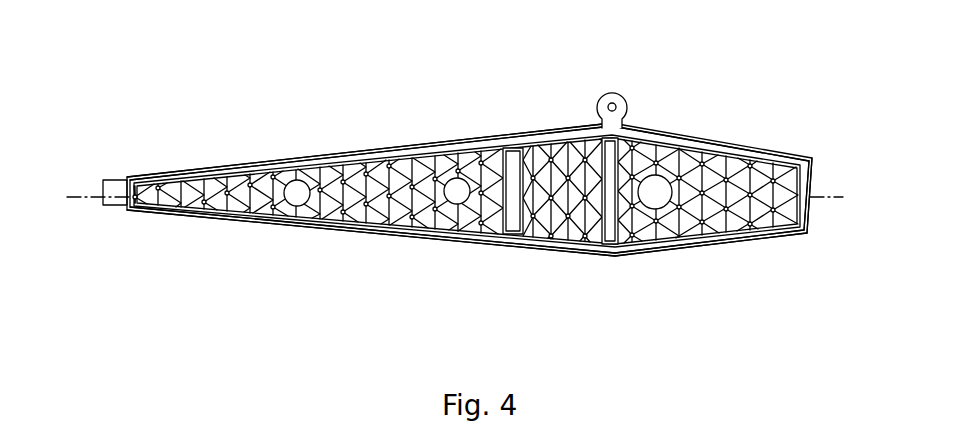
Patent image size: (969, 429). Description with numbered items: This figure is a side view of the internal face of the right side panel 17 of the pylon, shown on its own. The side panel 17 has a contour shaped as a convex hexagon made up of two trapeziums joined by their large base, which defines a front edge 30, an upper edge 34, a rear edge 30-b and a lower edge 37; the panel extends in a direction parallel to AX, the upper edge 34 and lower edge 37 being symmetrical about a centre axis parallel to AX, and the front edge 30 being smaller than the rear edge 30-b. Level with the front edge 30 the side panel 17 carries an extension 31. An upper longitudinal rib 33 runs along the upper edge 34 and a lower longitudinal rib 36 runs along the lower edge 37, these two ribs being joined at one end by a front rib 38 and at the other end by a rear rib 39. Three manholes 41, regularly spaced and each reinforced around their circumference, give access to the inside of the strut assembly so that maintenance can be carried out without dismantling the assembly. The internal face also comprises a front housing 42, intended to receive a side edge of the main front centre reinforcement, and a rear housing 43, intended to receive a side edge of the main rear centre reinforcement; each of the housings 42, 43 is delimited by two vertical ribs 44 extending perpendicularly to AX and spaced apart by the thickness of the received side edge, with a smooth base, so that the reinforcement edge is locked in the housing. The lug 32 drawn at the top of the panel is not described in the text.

The side panel 17 is at (228, 101).
The front edge 30 is at (103, 188).
The extension 31 is at (115, 186).
The attachment lug 32 is at (617, 96).
The upper longitudinal rib 33 is at (283, 165).
The upper edge 34 is at (332, 152).
The lower longitudinal rib 36 is at (336, 234).
The lower edge 37 is at (402, 245).
The front rib 38 is at (124, 206).
The rear rib 39 is at (813, 212).
The manholes 41 is at (295, 199).
The front housing 42 is at (511, 158).
The rear housing 43 is at (609, 162).
The vertical ribs 44 is at (520, 236).
The direction AX is at (826, 197).
The rear edge 30-b is at (812, 204).